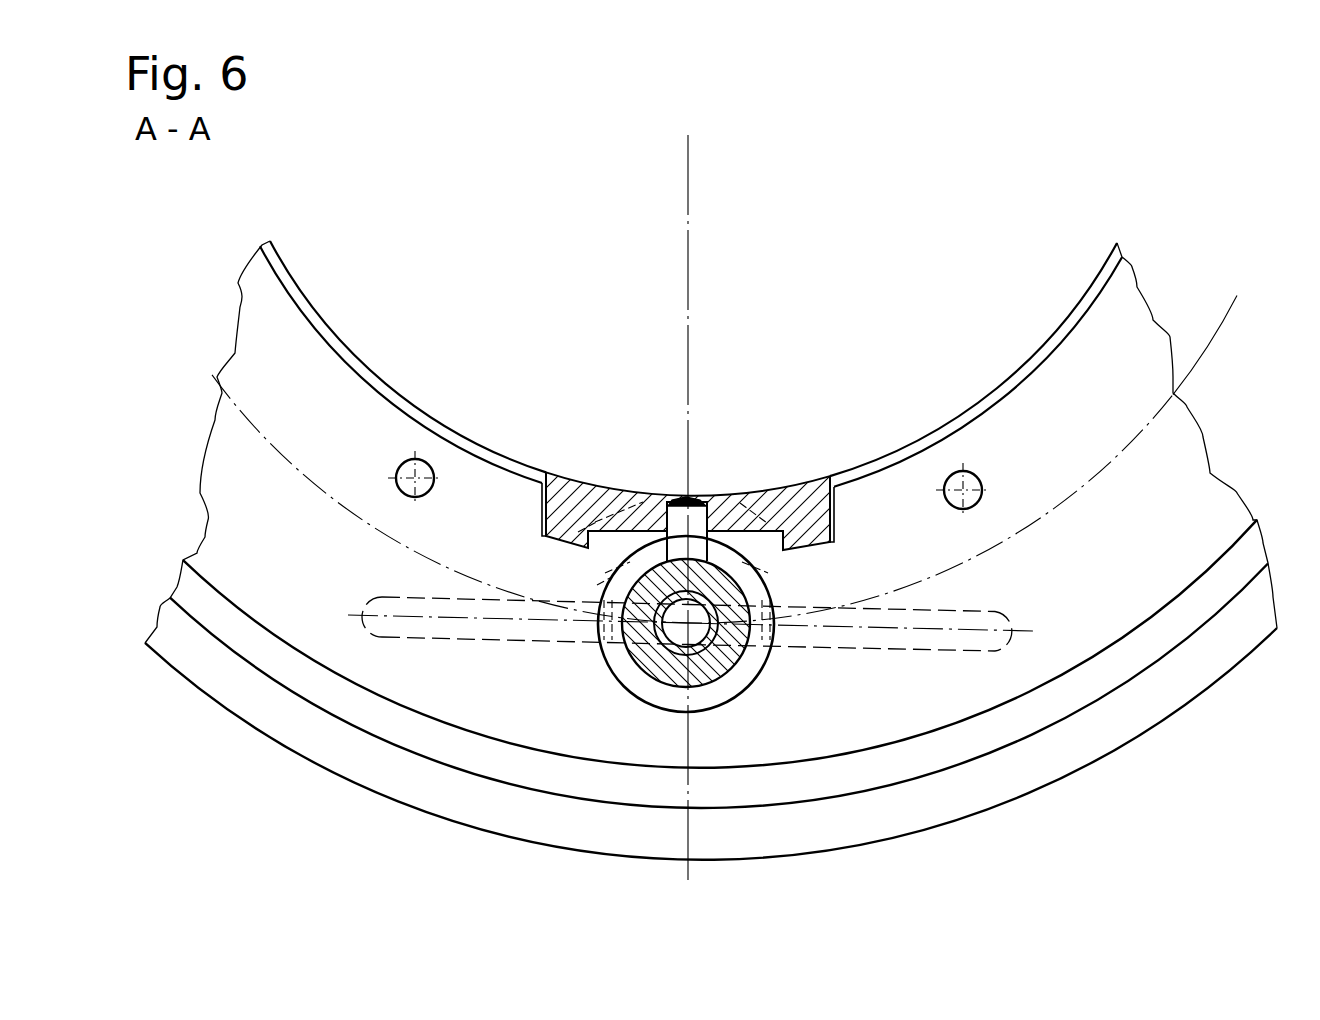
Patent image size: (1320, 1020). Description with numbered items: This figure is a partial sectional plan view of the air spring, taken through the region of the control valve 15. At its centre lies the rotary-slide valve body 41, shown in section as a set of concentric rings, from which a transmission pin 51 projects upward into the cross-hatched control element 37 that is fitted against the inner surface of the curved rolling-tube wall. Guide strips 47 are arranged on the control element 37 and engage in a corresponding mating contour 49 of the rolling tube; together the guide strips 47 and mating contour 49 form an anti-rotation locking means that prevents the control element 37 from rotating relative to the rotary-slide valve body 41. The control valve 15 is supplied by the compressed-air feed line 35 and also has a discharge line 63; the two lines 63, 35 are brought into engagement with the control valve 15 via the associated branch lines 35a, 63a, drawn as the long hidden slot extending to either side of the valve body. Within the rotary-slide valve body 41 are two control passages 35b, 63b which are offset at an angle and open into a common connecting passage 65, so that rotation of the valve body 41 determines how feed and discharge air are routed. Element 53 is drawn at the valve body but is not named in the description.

The control valve 15 is at (628, 723).
The compressed-air feed line 35 is at (983, 485).
The branch line 35a is at (879, 648).
The control passage 35b is at (722, 497).
The control element 37 is at (799, 500).
The rotary-slide valve body 41 is at (692, 668).
The guide strips 47 is at (827, 473).
The mating contour 49 is at (540, 530).
The transmission pin 51 is at (679, 497).
The bushing 53 is at (733, 650).
The discharge line 63 is at (400, 464).
The branch line 63a is at (548, 633).
The control passage 63b is at (628, 572).
The connecting passage 65 is at (687, 633).